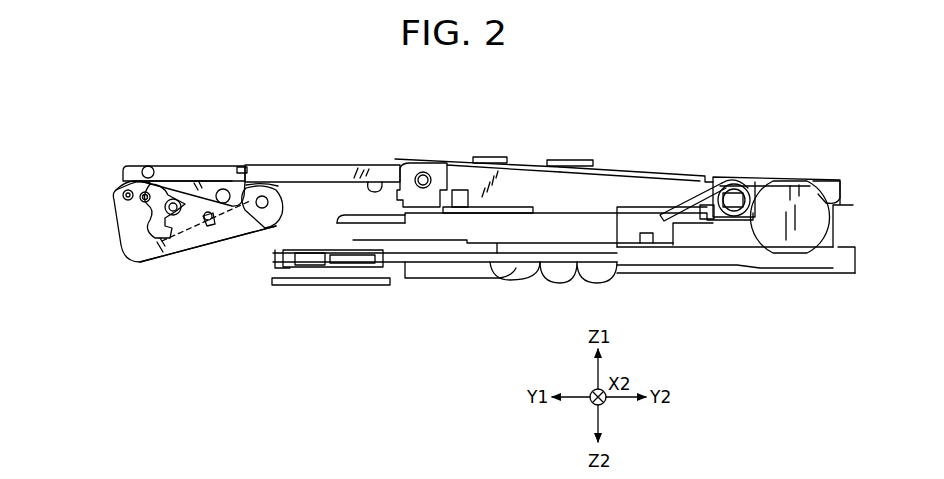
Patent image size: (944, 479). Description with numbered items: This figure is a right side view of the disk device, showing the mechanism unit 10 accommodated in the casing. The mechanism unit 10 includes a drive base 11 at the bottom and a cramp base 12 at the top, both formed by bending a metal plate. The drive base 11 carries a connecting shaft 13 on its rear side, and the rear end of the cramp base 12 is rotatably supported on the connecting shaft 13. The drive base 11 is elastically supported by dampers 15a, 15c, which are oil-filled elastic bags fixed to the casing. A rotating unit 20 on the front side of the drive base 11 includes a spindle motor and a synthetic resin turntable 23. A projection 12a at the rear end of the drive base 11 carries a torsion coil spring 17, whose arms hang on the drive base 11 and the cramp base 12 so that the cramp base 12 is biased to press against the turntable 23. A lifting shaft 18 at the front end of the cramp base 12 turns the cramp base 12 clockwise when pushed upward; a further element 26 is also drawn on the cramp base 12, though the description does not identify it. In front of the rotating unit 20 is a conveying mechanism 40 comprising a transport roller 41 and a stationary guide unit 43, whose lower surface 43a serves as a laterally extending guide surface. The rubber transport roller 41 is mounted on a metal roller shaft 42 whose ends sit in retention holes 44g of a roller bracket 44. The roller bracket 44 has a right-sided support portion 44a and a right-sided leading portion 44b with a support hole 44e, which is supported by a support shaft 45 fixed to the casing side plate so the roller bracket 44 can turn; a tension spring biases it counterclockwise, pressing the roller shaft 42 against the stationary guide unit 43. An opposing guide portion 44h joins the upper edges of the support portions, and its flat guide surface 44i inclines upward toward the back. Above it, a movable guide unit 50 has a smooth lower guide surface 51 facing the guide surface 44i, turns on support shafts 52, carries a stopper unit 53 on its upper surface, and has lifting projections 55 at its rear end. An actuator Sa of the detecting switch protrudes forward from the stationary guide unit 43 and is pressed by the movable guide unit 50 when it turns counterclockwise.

The mechanism unit 10 is at (794, 155).
The drive base 11 is at (718, 268).
The cramp base 12 is at (684, 176).
The projection 12a is at (738, 196).
The connecting shaft 13 is at (831, 181).
The damper 15a is at (797, 238).
The damper 15c is at (287, 248).
The torsion coil spring 17 is at (714, 180).
The lifting shaft 18 is at (424, 172).
The rotating unit 20 is at (555, 202).
The turntable 23 is at (513, 206).
The top plate 26 is at (458, 160).
The conveying mechanism 40 is at (292, 190).
The transport roller 41 is at (264, 194).
The roller shaft 42 is at (293, 187).
The stationary guide unit 43 is at (332, 175).
The lower surface 43a is at (377, 186).
The roller bracket 44 is at (130, 268).
The right-sided support portion 44a is at (180, 250).
The right-sided leading portion 44b is at (130, 224).
The support hole 44e is at (130, 188).
The retention hole 44g is at (278, 208).
The opposing guide portion 44h is at (207, 218).
The guide surface 44i is at (183, 197).
The support shaft 45 is at (122, 195).
The movable guide unit 50 is at (170, 166).
The guide surface 51 is at (186, 178).
The support shaft 52 is at (148, 165).
The stopper unit 53 is at (131, 166).
The lifting projection 55 is at (225, 189).
The actuator Sa is at (241, 165).